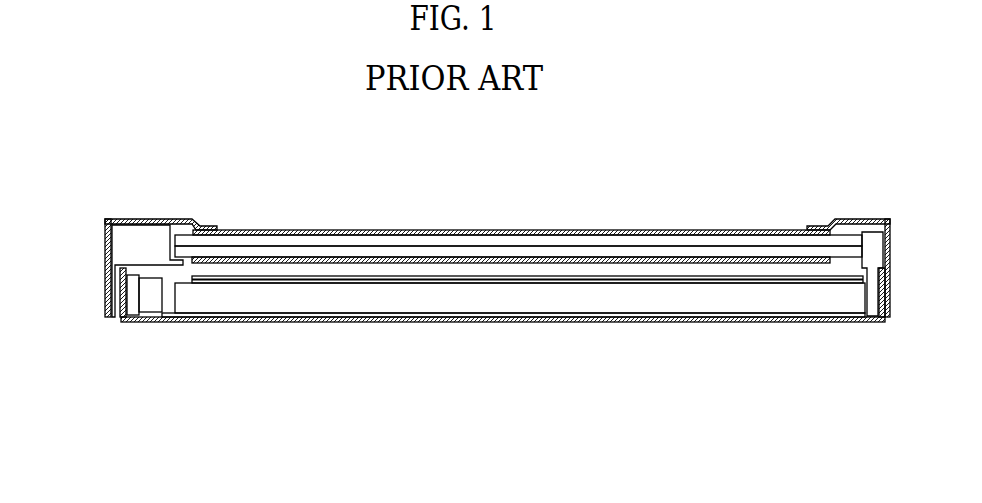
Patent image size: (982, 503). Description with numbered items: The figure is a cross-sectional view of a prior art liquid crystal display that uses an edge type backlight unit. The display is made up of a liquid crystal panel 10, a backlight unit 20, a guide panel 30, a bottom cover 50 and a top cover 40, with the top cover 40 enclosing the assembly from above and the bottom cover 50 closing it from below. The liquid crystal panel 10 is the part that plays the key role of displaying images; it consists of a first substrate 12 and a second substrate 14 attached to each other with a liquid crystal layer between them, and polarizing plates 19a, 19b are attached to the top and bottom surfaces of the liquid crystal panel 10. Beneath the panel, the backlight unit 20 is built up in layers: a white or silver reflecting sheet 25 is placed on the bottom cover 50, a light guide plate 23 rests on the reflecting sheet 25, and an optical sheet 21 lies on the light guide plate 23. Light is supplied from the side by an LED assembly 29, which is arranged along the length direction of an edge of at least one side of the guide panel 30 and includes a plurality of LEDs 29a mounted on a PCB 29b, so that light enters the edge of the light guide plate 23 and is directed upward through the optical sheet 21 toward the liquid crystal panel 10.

The liquid crystal panel 10 is at (518, 196).
The first substrate 12 is at (474, 250).
The second substrate 14 is at (435, 243).
The polarizing plate 19a is at (622, 257).
The polarizing plate 19b is at (579, 230).
The backlight unit 20 is at (491, 365).
The optical sheet 21 is at (312, 283).
The light guide plate 23 is at (268, 302).
The reflecting sheet 25 is at (227, 320).
The LED assembly 29 is at (148, 352).
The LED 29a is at (152, 300).
The PCB 29b is at (133, 312).
The guide panel 30 is at (133, 250).
The top cover 40 is at (162, 219).
The bottom cover 50 is at (507, 323).